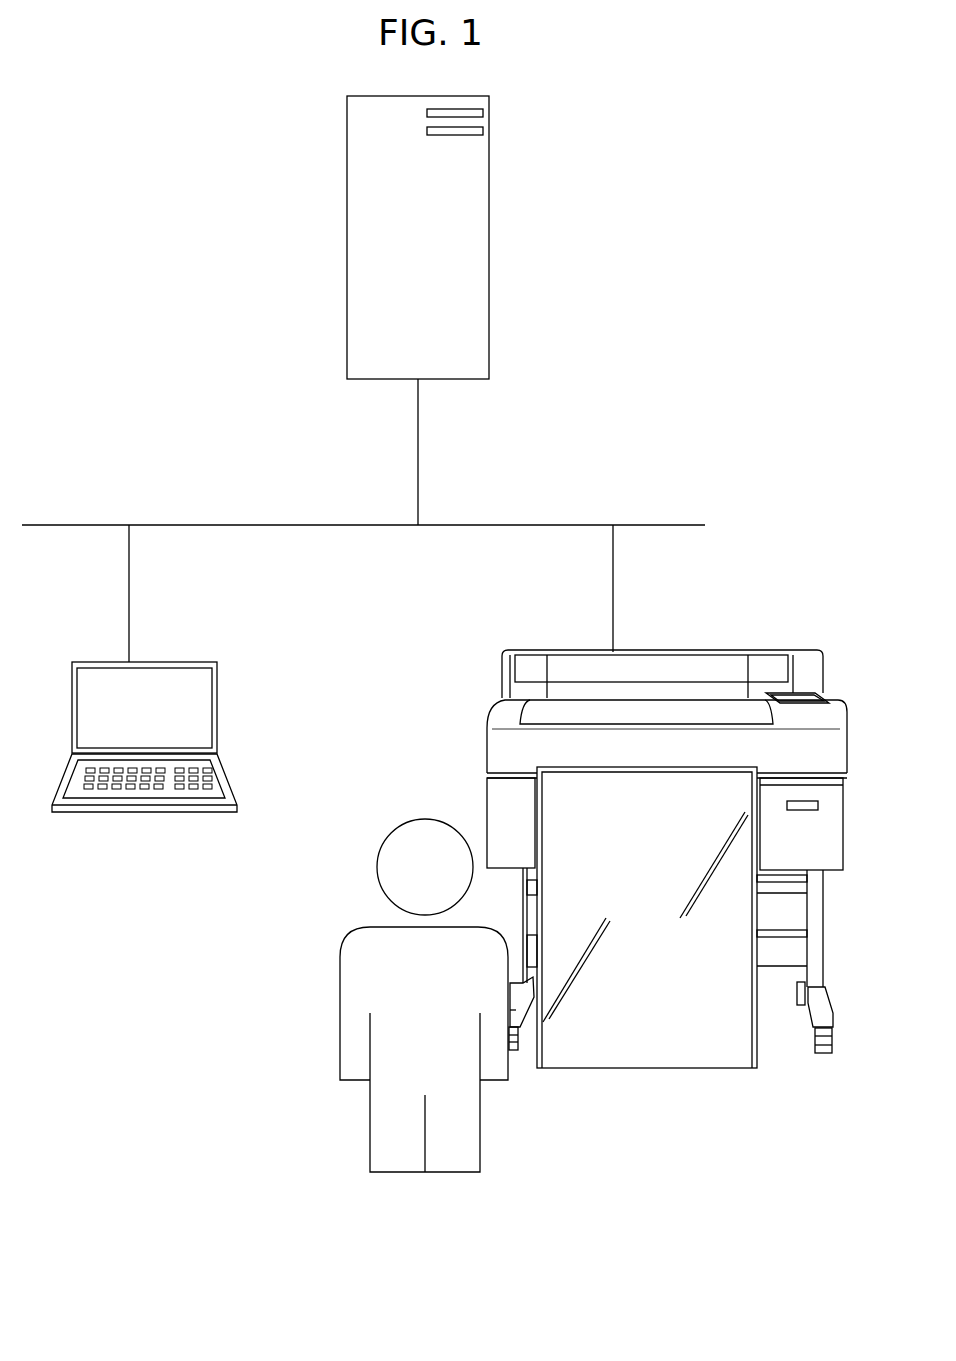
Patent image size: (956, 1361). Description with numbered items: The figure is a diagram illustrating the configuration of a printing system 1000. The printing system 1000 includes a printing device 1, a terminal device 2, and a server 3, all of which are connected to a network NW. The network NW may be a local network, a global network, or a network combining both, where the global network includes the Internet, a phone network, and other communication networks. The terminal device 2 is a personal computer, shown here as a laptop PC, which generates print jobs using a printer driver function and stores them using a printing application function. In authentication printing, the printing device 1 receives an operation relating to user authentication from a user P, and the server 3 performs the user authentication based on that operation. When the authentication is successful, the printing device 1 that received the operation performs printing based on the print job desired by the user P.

The printing system 1000 is at (109, 341).
The printing device 1 is at (763, 648).
The terminal device 2 is at (180, 662).
The server 3 is at (489, 300).
The network NW is at (558, 525).
The user P is at (340, 970).